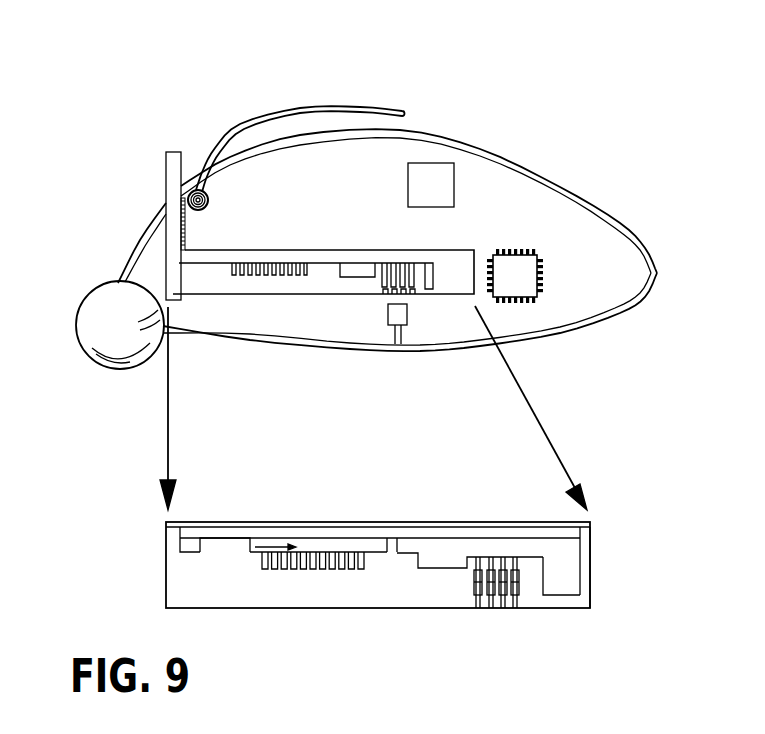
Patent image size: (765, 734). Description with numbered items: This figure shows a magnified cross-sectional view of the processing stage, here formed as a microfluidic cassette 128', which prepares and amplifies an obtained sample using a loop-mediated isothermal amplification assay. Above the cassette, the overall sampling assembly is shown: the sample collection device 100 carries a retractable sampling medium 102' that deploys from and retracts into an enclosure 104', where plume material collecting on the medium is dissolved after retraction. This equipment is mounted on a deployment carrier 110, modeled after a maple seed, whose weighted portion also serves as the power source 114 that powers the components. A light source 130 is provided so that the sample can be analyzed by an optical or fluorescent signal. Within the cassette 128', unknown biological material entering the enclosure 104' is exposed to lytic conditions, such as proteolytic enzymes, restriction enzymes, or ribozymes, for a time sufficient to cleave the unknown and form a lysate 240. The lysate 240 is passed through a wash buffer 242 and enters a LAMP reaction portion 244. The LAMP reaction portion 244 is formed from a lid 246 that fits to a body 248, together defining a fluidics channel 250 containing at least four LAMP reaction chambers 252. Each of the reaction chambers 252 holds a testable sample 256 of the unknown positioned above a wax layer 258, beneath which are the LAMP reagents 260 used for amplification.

The sample collection device 100 is at (215, 70).
The sampling medium 102' is at (300, 124).
The enclosure 104' is at (241, 205).
The deployment carrier 110 is at (284, 340).
The power source 114 is at (86, 298).
The light source 130 is at (403, 327).
The microfluidic cassette 128' is at (378, 594).
The lysate 240 is at (226, 545).
The wash buffer 242 is at (388, 545).
The LAMP reaction portion 244 is at (427, 516).
The lid 246 is at (583, 535).
The body 248 is at (591, 580).
The fluidics channel 250 is at (507, 547).
The LAMP reaction chambers 252 is at (552, 585).
The testable sample 256 is at (478, 560).
The wax layer 258 is at (519, 582).
The LAMP reagents 260 is at (501, 583).